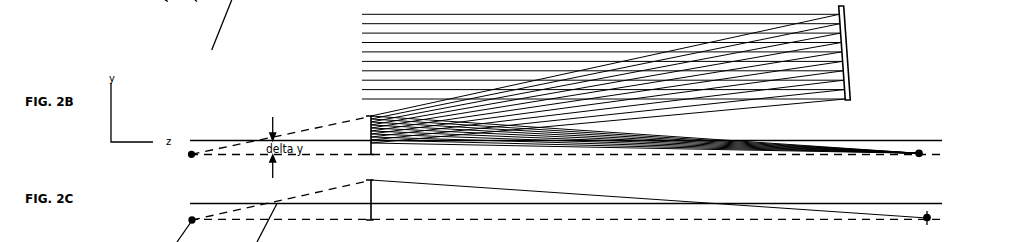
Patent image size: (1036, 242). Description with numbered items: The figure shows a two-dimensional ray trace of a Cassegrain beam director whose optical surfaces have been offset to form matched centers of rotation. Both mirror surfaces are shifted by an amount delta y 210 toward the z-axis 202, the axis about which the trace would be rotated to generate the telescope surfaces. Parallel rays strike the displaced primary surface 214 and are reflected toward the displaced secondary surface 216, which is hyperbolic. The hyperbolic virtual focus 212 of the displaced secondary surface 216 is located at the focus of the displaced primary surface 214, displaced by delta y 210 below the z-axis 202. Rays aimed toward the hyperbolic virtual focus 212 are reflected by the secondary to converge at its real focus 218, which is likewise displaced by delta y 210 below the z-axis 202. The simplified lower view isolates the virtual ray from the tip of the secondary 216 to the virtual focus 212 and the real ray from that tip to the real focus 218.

In FIG. 2B, the z-axis 202 is at (218, 140).
In FIG. 2B, the delta y 210 is at (262, 140).
In FIG. 2B, the hyperbolic virtual focus 212 is at (192, 153).
In FIG. 2B, the displaced primary surface 214 is at (851, 47).
In FIG. 2B, the displaced secondary surface 216 is at (367, 118).
In FIG. 2C, the displaced secondary surface 216 is at (372, 192).
In FIG. 2B, the real focus 218 is at (922, 152).
In FIG. 2C, the real focus 218 is at (927, 216).